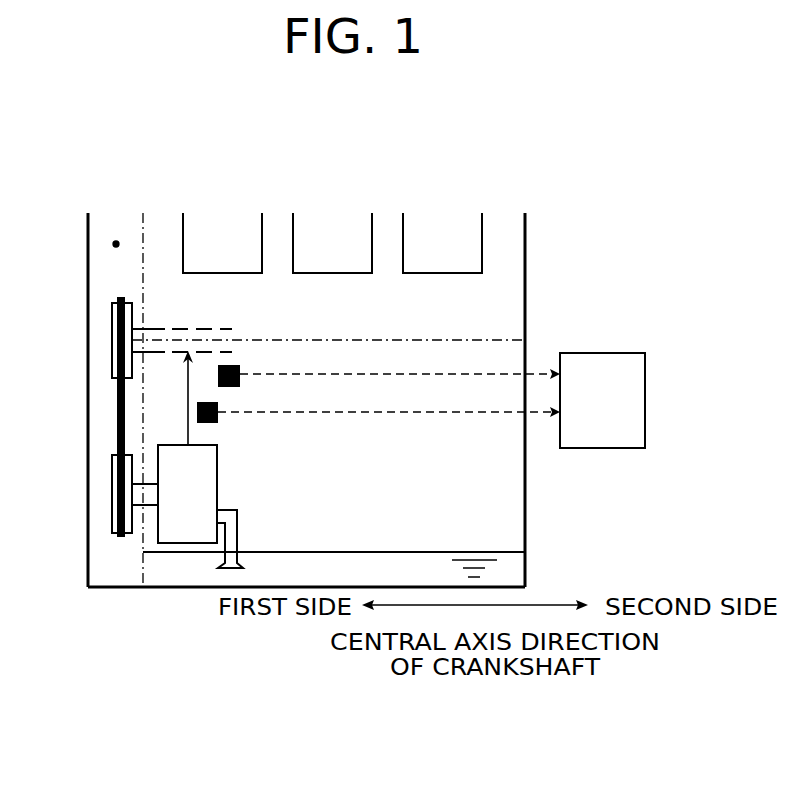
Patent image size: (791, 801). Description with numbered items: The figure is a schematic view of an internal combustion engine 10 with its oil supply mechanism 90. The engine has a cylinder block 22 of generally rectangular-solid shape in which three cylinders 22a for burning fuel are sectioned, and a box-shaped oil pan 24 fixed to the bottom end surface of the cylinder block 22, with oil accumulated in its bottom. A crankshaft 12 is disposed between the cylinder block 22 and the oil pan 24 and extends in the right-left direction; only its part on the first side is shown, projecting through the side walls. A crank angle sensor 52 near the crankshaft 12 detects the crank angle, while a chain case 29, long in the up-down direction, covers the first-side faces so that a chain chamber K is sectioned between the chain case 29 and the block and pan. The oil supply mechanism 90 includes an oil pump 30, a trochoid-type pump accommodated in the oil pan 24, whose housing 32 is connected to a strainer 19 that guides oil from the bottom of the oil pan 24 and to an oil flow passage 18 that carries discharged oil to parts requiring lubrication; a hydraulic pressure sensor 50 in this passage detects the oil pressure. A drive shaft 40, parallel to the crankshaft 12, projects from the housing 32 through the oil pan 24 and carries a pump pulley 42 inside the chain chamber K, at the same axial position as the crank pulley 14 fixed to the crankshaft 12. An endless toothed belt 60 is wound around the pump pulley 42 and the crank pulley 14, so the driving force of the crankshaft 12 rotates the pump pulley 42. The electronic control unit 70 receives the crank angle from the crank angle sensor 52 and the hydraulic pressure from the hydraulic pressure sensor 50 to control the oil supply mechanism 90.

The internal combustion engine 10 is at (632, 250).
The crankshaft 12 is at (150, 329).
The crank pulley 14 is at (110, 315).
The oil flow passage 18 is at (188, 407).
The strainer 19 is at (237, 528).
The cylinder block 22 is at (527, 250).
The cylinders 22a is at (238, 273).
The oil pan 24 is at (527, 503).
The chain case 29 is at (88, 267).
The oil pump 30 is at (187, 494).
The housing 32 is at (217, 462).
The drive shaft 40 is at (138, 508).
The pump pulley 42 is at (110, 478).
The hydraulic pressure sensor 50 is at (218, 418).
The crank angle sensor 52 is at (240, 372).
The toothed belt 60 is at (117, 407).
The electronic control unit 70 is at (645, 367).
The oil supply mechanism 90 is at (315, 493).
The chain chamber K is at (114, 243).